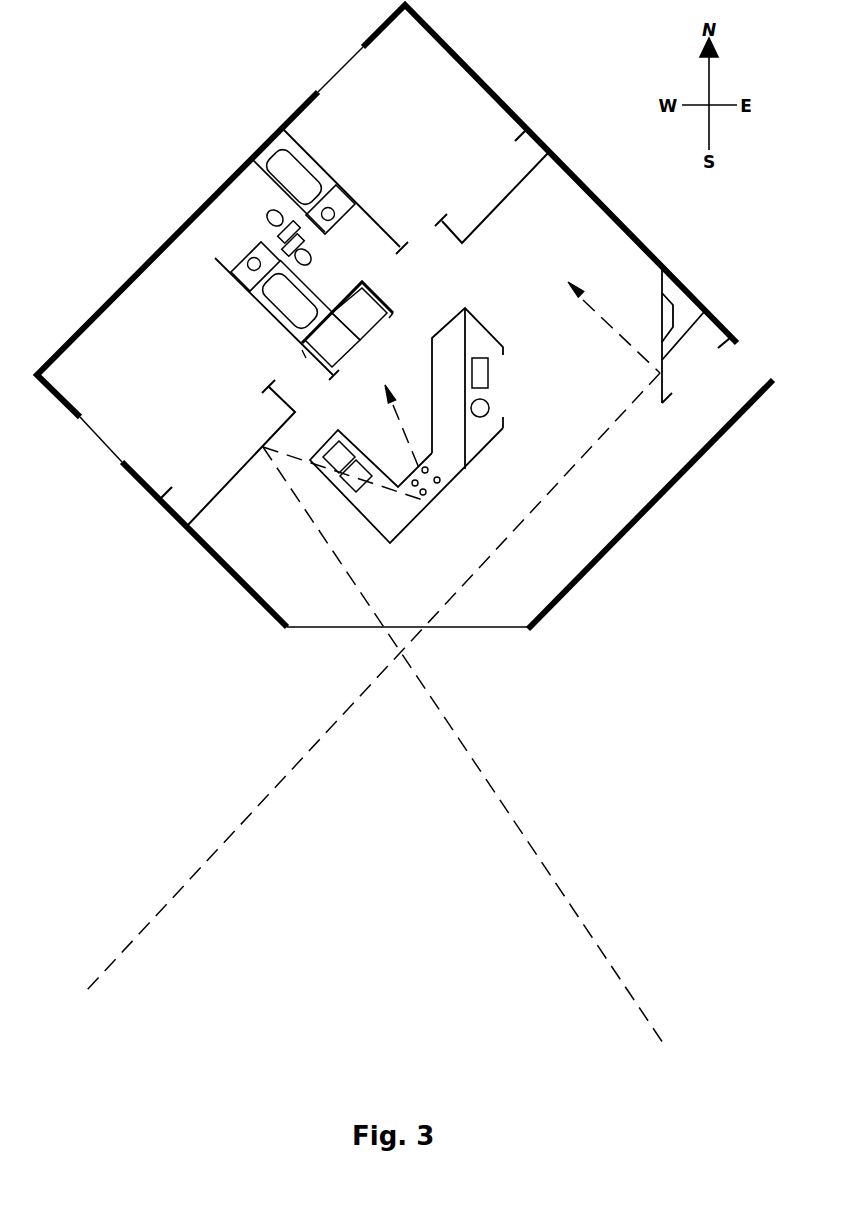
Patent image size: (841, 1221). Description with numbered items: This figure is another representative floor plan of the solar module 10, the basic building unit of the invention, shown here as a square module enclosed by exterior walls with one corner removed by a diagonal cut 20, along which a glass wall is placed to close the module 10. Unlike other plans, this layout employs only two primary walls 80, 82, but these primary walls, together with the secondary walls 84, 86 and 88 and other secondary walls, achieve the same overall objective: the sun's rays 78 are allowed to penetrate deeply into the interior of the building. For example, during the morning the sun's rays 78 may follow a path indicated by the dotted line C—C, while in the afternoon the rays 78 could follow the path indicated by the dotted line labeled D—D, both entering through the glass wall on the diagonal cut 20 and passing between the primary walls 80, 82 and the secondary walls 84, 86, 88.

The solar module 10 is at (196, 164).
The diagonal cut 20 is at (457, 630).
The sun's rays 78 is at (265, 800).
The primary wall 80 is at (467, 440).
The primary wall 82 is at (659, 391).
The secondary wall 84 is at (418, 505).
The secondary wall 86 is at (512, 192).
The secondary wall 88 is at (238, 473).